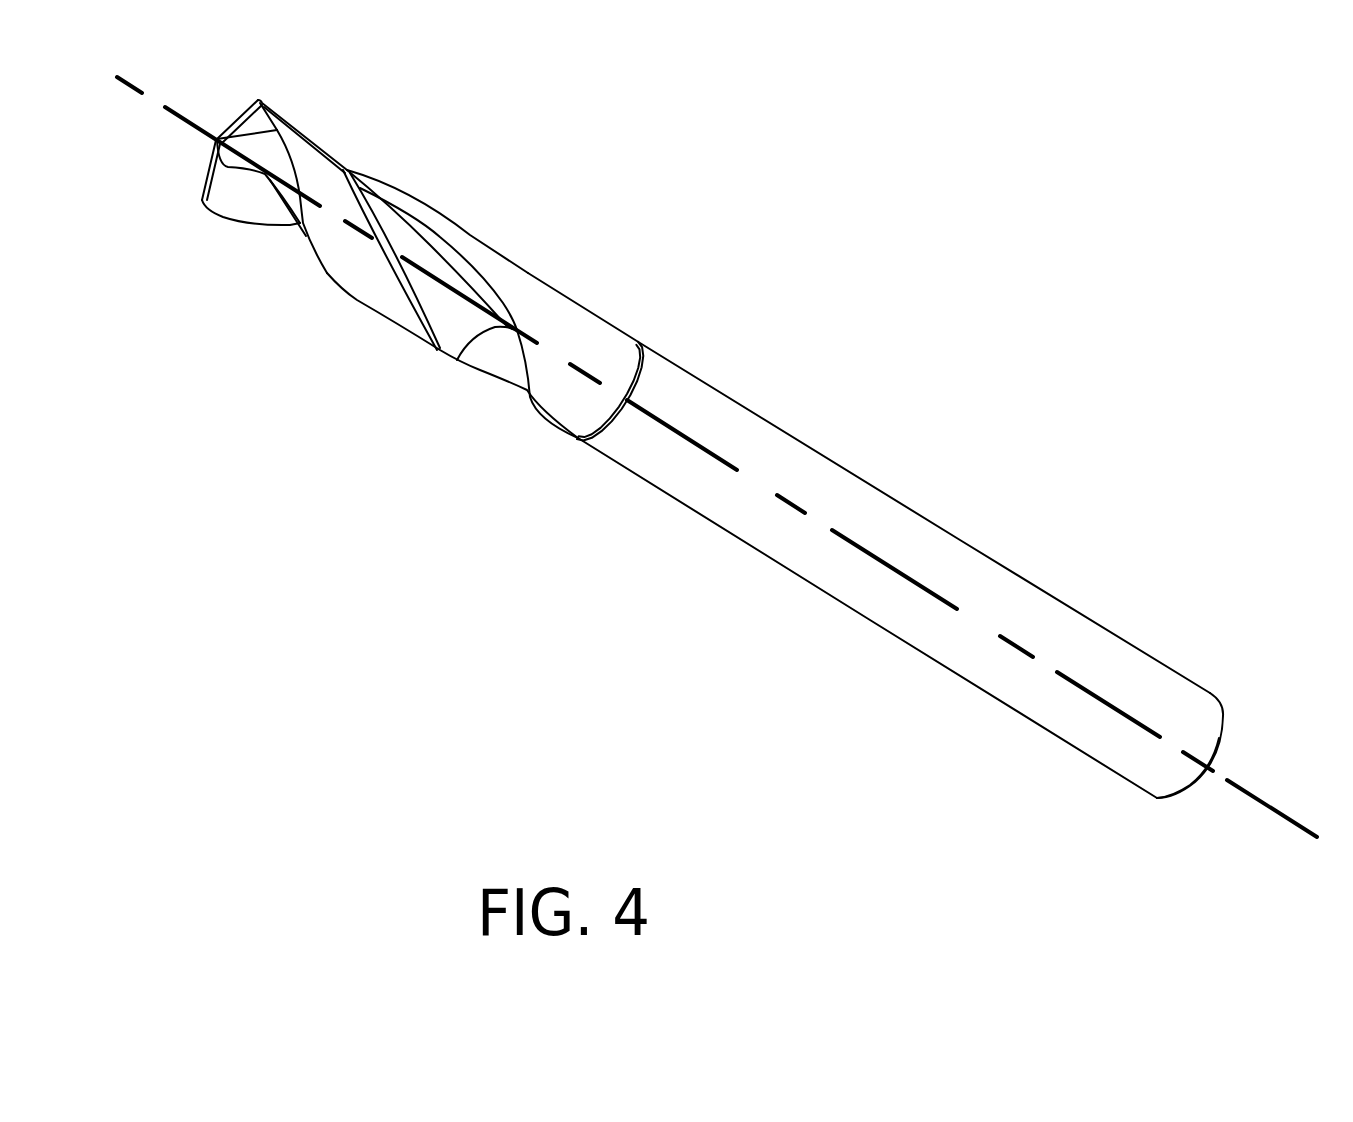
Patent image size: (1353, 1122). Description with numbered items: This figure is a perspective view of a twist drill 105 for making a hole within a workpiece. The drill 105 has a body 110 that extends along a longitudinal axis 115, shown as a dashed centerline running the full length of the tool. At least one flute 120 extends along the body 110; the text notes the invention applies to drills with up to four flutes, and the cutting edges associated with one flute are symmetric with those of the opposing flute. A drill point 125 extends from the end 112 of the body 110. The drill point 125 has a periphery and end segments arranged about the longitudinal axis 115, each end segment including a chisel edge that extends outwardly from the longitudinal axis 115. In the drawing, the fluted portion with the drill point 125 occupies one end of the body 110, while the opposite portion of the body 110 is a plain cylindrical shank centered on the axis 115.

The drill 105 is at (743, 132).
The body 110 is at (893, 523).
The end 112 is at (348, 316).
The longitudinal axis 115 is at (1113, 705).
The flute 120 is at (299, 228).
The drill point 125 is at (215, 231).